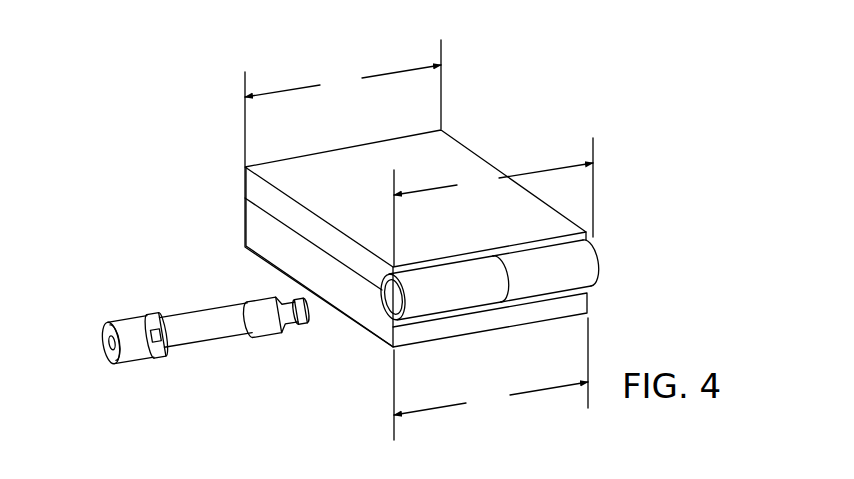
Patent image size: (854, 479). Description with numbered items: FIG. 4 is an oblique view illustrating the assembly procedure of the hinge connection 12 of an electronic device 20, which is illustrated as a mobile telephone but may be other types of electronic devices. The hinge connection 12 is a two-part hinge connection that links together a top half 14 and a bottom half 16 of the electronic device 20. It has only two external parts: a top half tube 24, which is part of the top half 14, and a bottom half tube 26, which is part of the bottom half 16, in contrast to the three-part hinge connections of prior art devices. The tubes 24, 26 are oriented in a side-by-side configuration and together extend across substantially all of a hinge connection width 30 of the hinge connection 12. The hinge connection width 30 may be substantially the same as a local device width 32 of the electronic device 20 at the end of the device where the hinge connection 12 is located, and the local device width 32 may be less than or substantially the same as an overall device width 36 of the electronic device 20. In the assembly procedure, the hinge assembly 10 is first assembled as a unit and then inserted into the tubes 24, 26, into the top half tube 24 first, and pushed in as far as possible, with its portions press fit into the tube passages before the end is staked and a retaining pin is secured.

The hinge assembly 10 is at (90, 323).
The hinge connection 12 is at (609, 292).
The top half 14 is at (244, 178).
The bottom half 16 is at (246, 225).
The electronic device 20 is at (187, 92).
The top half tube 24 is at (467, 290).
The bottom half tube 26 is at (584, 263).
The hinge connection width 30 is at (493, 202).
The local device width 32 is at (491, 379).
The overall device width 36 is at (343, 103).